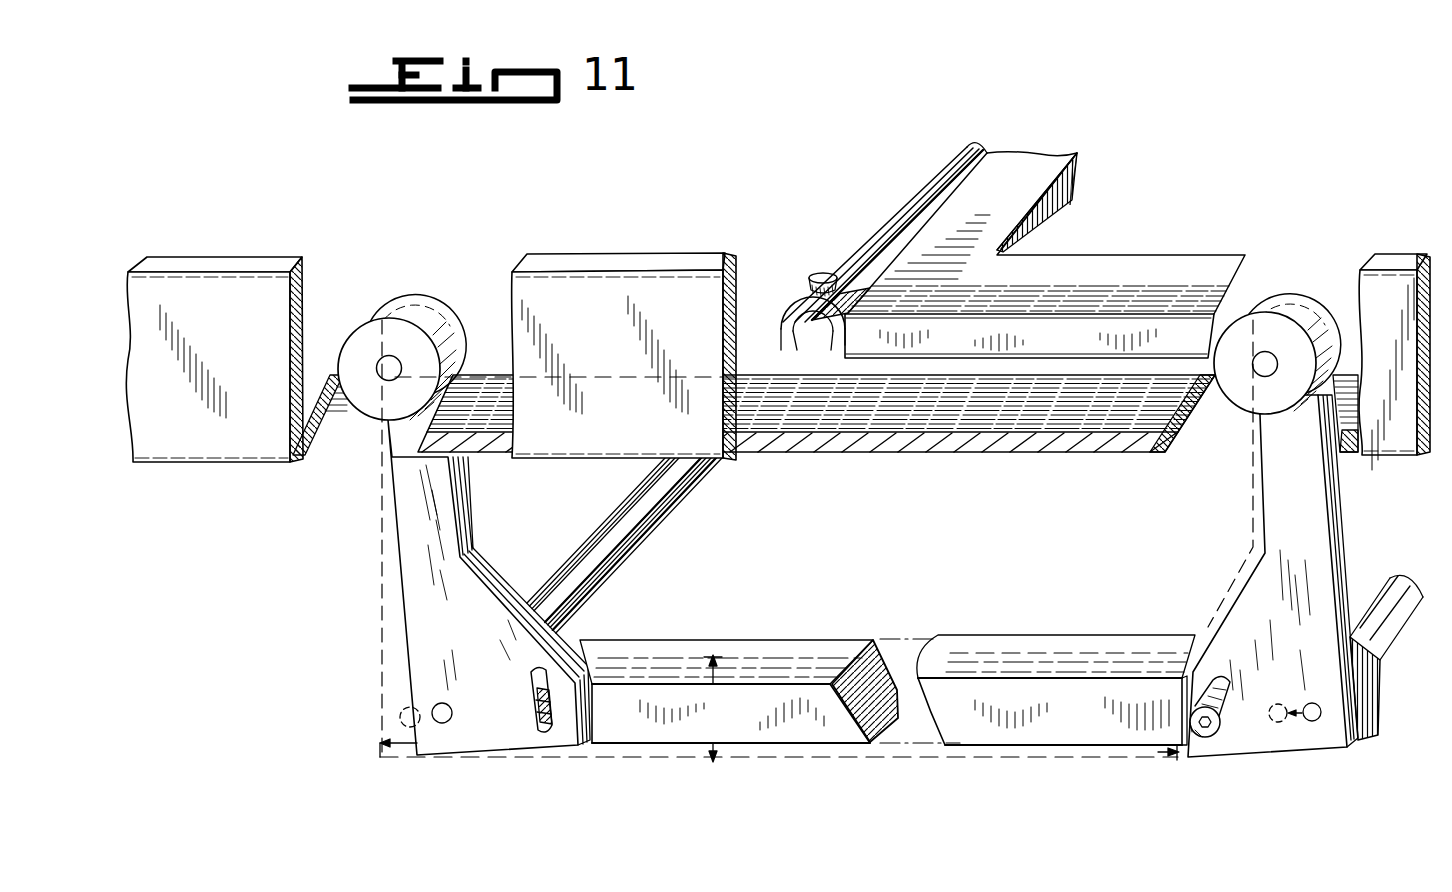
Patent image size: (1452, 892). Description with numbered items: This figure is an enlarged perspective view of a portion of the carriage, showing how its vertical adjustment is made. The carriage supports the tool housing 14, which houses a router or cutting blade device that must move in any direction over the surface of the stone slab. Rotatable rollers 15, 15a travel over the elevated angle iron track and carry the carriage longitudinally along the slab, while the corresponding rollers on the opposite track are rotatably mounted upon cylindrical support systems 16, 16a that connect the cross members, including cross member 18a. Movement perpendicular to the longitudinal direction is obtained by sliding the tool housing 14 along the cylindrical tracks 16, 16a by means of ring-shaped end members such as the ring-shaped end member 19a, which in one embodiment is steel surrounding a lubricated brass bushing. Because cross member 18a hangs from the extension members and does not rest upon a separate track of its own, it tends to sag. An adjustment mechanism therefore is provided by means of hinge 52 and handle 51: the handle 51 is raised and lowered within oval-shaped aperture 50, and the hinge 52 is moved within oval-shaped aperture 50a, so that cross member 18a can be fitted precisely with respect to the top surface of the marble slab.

The tool housing 14 is at (1045, 262).
The rotatable roller 15 is at (1283, 298).
The rotatable roller 15a is at (405, 298).
The cylindrical support system 16 is at (1352, 512).
The cylindrical support system 16a is at (405, 477).
The cross member 18a is at (814, 732).
The ring-shaped end member 19a is at (842, 265).
The oval-shaped aperture 50 is at (1232, 743).
The oval-shaped aperture 50a is at (553, 733).
The handle 51 is at (1213, 735).
The hinge 52 is at (528, 722).